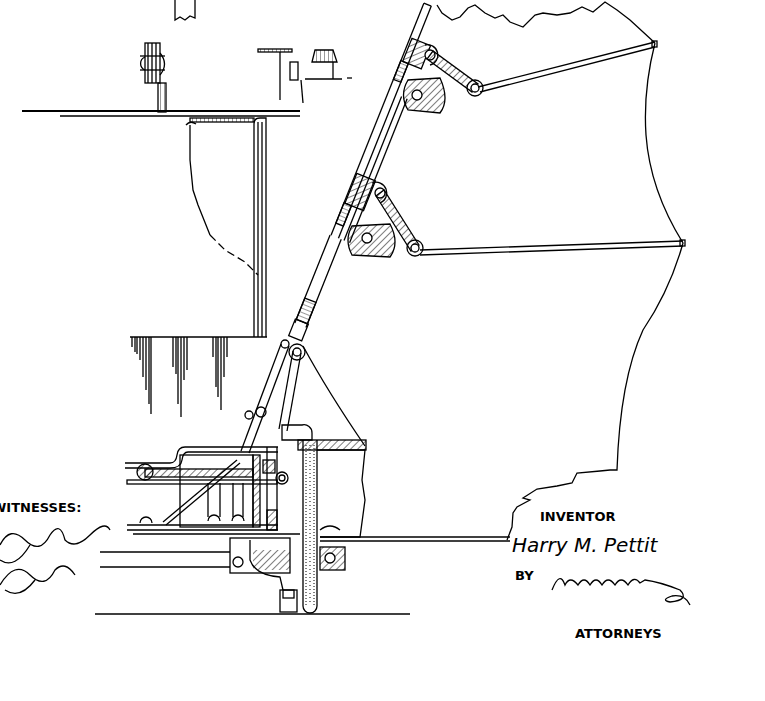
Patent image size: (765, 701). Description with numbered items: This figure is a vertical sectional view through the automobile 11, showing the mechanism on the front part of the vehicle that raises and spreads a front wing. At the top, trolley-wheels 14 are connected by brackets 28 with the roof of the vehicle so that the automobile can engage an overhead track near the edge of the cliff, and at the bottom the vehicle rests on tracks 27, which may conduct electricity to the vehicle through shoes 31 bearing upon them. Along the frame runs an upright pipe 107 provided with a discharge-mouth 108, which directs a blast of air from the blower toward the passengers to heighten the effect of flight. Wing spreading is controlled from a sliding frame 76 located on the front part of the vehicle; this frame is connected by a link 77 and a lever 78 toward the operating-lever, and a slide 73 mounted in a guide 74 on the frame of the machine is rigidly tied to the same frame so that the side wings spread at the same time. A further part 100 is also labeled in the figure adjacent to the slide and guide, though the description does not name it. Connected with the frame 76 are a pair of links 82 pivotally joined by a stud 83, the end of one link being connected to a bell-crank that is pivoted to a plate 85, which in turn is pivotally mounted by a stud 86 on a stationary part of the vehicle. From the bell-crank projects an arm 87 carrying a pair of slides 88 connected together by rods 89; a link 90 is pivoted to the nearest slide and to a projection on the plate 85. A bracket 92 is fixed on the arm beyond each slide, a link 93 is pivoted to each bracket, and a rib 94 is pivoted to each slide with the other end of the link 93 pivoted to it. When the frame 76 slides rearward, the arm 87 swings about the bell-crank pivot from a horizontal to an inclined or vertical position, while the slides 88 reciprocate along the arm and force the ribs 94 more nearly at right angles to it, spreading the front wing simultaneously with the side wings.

The automobile 11 is at (160, 350).
The trolley-wheels 14 is at (145, 53).
The tracks 27 is at (288, 614).
The brackets 28 is at (168, 84).
The shoes 31 is at (280, 595).
The slide 73 is at (318, 466).
The guide 74 is at (290, 472).
The sliding frame 76 is at (183, 530).
The link 77 is at (138, 465).
The lever 78 is at (178, 485).
The links 82 is at (270, 370).
The stud 83 is at (283, 378).
The plate 85 is at (288, 402).
The stud 86 is at (296, 422).
The arm 87 is at (383, 140).
The slides 88 is at (420, 106).
The rods 89 is at (392, 153).
The link 90 is at (328, 298).
The bracket 92 is at (410, 48).
The link 93 is at (452, 62).
The rib 94 is at (553, 76).
The column 100 is at (320, 488).
The upright pipes 107 is at (259, 187).
The discharge-mouths 108 is at (189, 130).